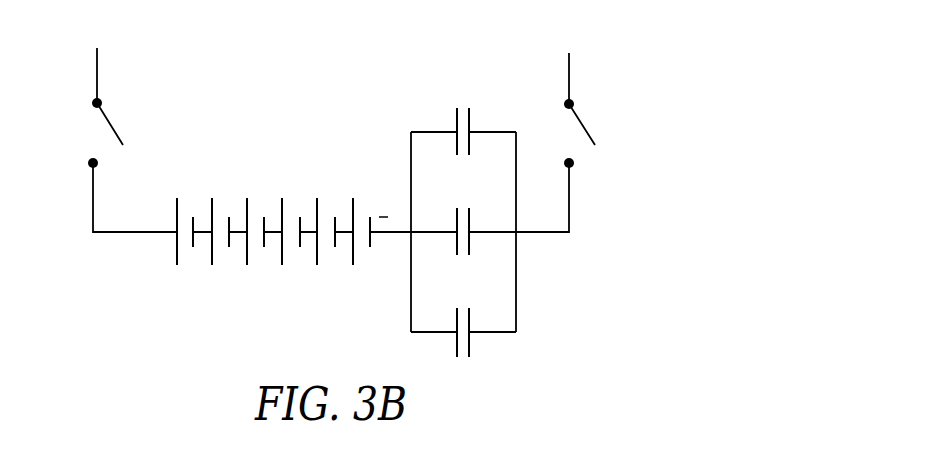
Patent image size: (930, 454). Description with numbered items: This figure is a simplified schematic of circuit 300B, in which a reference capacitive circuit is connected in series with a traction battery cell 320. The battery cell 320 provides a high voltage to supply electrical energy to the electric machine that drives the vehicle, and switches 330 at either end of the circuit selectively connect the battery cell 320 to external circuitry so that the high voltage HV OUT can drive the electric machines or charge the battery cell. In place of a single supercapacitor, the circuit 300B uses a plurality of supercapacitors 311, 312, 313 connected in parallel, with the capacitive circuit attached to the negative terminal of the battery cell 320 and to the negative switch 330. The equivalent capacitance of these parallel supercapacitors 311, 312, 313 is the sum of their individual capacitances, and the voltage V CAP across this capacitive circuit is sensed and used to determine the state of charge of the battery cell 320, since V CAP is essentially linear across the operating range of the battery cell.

The schematic circuit 300B is at (680, 70).
The switches 330 is at (97, 82).
The traction battery cell 320 is at (240, 166).
The supercapacitor 311 is at (472, 118).
The supercapacitor 312 is at (455, 218).
The supercapacitor 313 is at (456, 345).